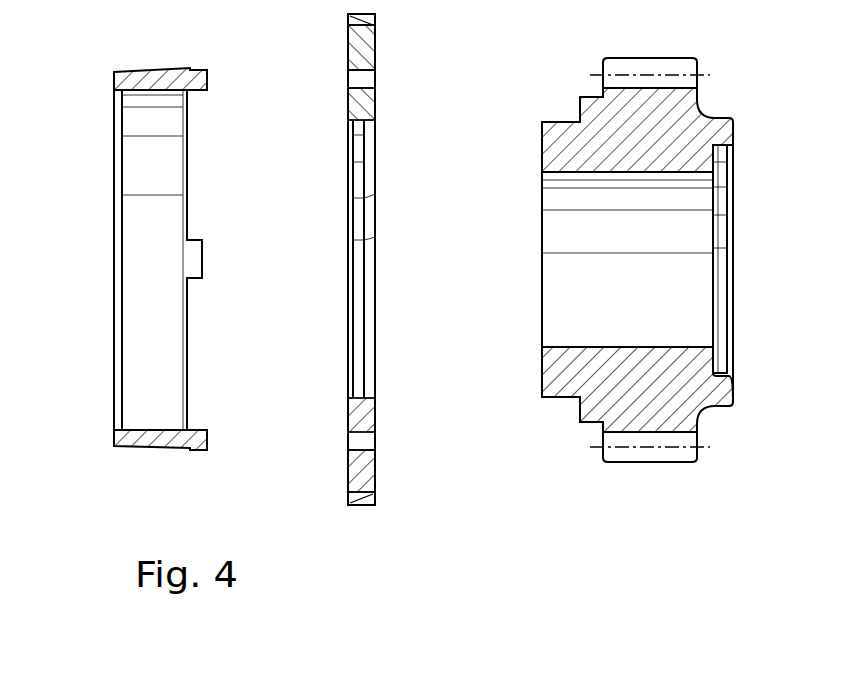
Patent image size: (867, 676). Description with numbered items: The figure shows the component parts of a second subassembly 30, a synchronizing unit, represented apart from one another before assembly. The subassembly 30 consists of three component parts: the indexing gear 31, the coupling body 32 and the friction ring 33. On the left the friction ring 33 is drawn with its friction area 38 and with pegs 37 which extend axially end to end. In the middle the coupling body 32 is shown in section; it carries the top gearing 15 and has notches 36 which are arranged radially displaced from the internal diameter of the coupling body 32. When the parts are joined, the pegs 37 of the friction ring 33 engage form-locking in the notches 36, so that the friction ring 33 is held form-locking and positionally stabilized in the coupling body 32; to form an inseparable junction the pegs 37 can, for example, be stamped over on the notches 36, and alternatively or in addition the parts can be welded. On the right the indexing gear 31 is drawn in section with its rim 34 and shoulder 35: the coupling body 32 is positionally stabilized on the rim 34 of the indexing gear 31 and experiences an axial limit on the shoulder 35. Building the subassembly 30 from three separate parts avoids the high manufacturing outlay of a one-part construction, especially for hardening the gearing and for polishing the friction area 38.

The top gearing 15 is at (364, 494).
The second subassembly 30 is at (395, 460).
The indexing gear 31 is at (641, 70).
The coupling body 32 is at (368, 42).
The friction ring 33 is at (118, 80).
The rim 34 is at (561, 122).
The shoulder 35 is at (580, 105).
The notches 36 is at (363, 82).
The pegs 37 is at (197, 69).
The friction area 38 is at (150, 70).